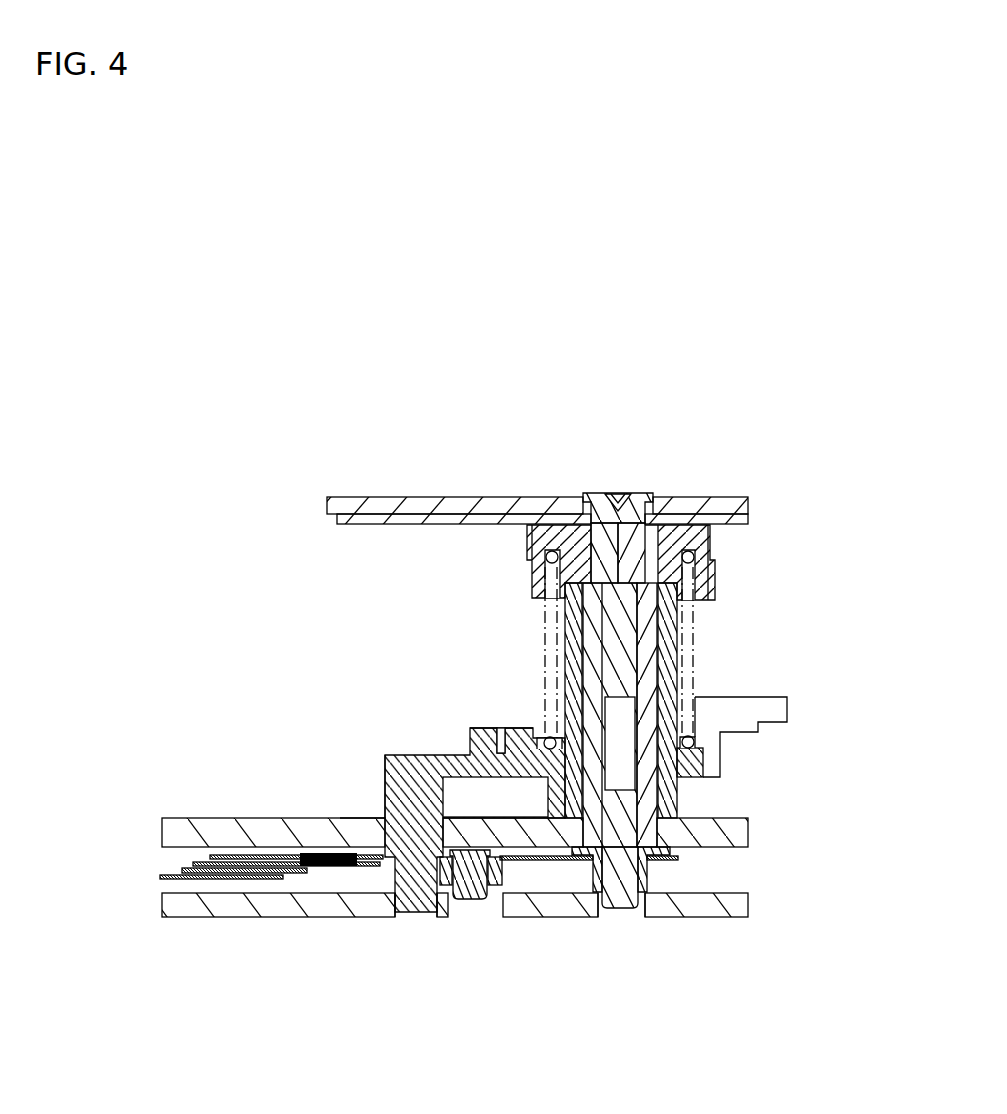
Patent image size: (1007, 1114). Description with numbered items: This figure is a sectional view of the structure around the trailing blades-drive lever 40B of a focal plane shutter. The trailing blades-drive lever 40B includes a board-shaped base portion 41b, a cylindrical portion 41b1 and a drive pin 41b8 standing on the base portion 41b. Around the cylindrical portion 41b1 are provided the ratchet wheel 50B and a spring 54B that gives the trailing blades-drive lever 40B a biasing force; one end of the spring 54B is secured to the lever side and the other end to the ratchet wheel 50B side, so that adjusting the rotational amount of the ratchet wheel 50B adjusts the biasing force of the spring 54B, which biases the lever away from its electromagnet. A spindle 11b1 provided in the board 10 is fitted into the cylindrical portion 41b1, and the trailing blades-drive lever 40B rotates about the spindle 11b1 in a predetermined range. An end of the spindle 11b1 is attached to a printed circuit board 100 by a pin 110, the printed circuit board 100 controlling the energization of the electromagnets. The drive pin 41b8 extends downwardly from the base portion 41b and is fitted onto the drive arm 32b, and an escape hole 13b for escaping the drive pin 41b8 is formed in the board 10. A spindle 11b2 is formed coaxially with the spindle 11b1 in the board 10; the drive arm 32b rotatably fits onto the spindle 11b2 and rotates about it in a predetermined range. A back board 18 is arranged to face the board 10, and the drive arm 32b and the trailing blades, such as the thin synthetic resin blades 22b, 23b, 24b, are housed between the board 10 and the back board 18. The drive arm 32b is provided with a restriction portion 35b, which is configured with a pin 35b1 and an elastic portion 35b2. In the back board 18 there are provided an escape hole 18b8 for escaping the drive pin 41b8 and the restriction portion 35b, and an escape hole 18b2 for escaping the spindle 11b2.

The printed circuit board 100 is at (530, 506).
The pin 110 is at (618, 497).
The spindle 11b1 is at (648, 702).
The spindle 11b2 is at (622, 906).
The ratchet wheel 50B is at (731, 578).
The spring 54B is at (695, 618).
The cylindrical portion 41b1 is at (573, 614).
The trailing blades-drive lever 40B is at (437, 741).
The base portion 41b is at (475, 727).
The drive pin 41b8 is at (386, 775).
The board 10 is at (206, 803).
The escape hole 13b is at (383, 818).
The back board 18 is at (191, 932).
The blade 22b is at (250, 879).
The blade 23b is at (297, 873).
The blade 24b is at (355, 866).
The escape hole 18b8 is at (382, 897).
The restriction portion 35b is at (482, 961).
The pin 35b1 is at (466, 903).
The elastic portion 35b2 is at (500, 887).
The drive arm 32b is at (558, 862).
The escape hole 18b2 is at (598, 893).